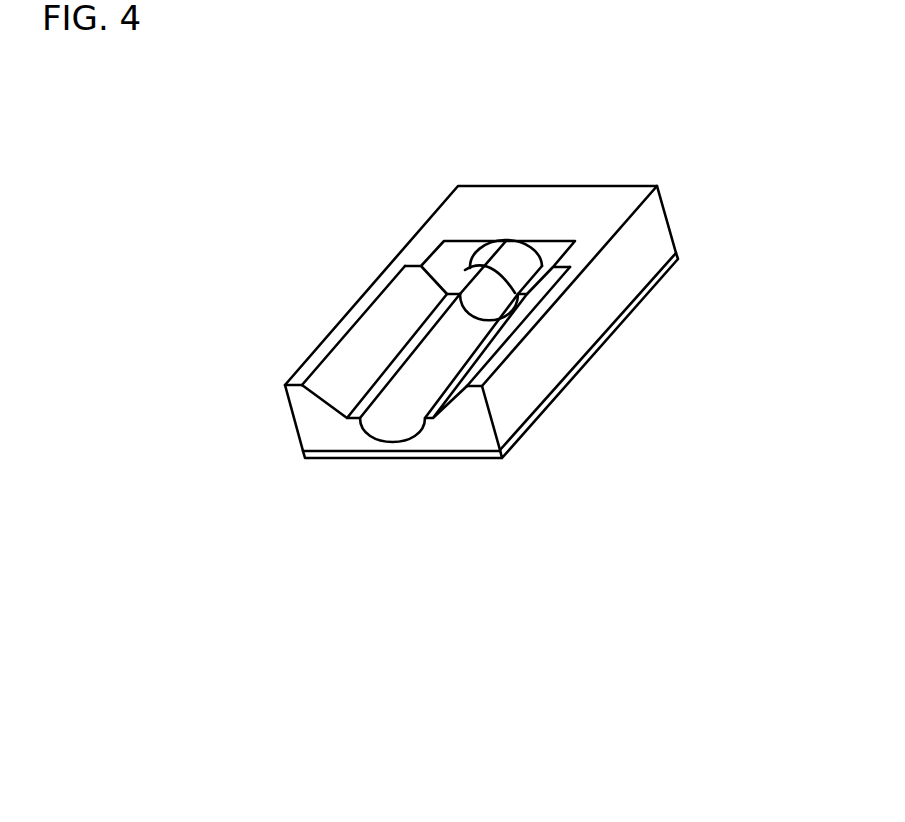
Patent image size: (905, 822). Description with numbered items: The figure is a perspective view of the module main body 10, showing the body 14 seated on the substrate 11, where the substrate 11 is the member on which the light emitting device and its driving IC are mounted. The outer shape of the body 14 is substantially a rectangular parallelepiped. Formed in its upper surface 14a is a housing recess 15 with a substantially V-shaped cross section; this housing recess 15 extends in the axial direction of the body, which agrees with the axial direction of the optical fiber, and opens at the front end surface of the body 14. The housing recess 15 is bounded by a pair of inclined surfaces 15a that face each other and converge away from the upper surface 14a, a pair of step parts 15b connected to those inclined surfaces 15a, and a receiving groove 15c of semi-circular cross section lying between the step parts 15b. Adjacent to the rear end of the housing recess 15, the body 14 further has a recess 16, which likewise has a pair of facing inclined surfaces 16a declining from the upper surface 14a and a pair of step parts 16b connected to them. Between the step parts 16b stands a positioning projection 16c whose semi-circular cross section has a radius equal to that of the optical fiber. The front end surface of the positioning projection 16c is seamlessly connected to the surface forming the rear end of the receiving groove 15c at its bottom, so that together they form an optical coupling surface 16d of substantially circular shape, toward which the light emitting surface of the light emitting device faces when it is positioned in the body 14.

The module main body 10 is at (292, 131).
The substrate 11 is at (653, 285).
The body 14 is at (672, 215).
The upper surface 14a is at (627, 188).
The housing recess 15 is at (357, 342).
The inclined surfaces 15a is at (331, 386).
The step parts 15b is at (357, 417).
The receiving groove 15c is at (393, 428).
The recess 16 is at (440, 260).
The inclined surfaces 16a is at (460, 270).
The step parts 16b is at (462, 268).
The positioning projection 16c is at (510, 248).
The optical coupling surface 16d is at (489, 300).